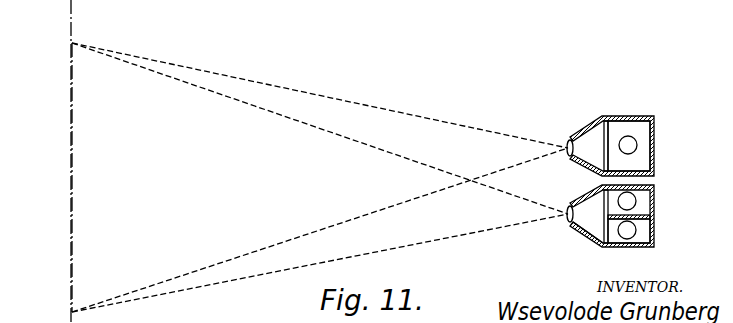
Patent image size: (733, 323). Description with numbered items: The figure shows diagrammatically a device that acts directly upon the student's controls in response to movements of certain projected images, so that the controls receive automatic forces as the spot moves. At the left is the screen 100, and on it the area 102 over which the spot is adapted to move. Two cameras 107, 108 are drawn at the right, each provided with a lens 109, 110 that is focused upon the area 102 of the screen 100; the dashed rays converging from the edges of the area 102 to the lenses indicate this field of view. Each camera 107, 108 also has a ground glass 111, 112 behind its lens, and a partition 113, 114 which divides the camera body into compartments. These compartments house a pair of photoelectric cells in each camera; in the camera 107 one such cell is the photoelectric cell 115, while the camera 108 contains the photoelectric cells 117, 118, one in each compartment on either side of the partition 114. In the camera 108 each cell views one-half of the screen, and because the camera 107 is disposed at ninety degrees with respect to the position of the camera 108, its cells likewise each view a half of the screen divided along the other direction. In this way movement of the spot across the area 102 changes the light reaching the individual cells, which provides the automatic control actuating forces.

The screen 100 is at (73, 23).
The area of the screen 102 is at (72, 75).
The camera 107 is at (628, 117).
The camera 108 is at (655, 208).
The lens 109 is at (565, 141).
The lens 110 is at (567, 218).
The ground glass 111 is at (598, 135).
The ground glass 112 is at (603, 238).
The partition 113 is at (640, 163).
The partition 114 is at (627, 230).
The photoelectric cell 115 is at (628, 144).
The photoelectric cell 117 is at (627, 201).
The photoelectric cell 118 is at (645, 238).